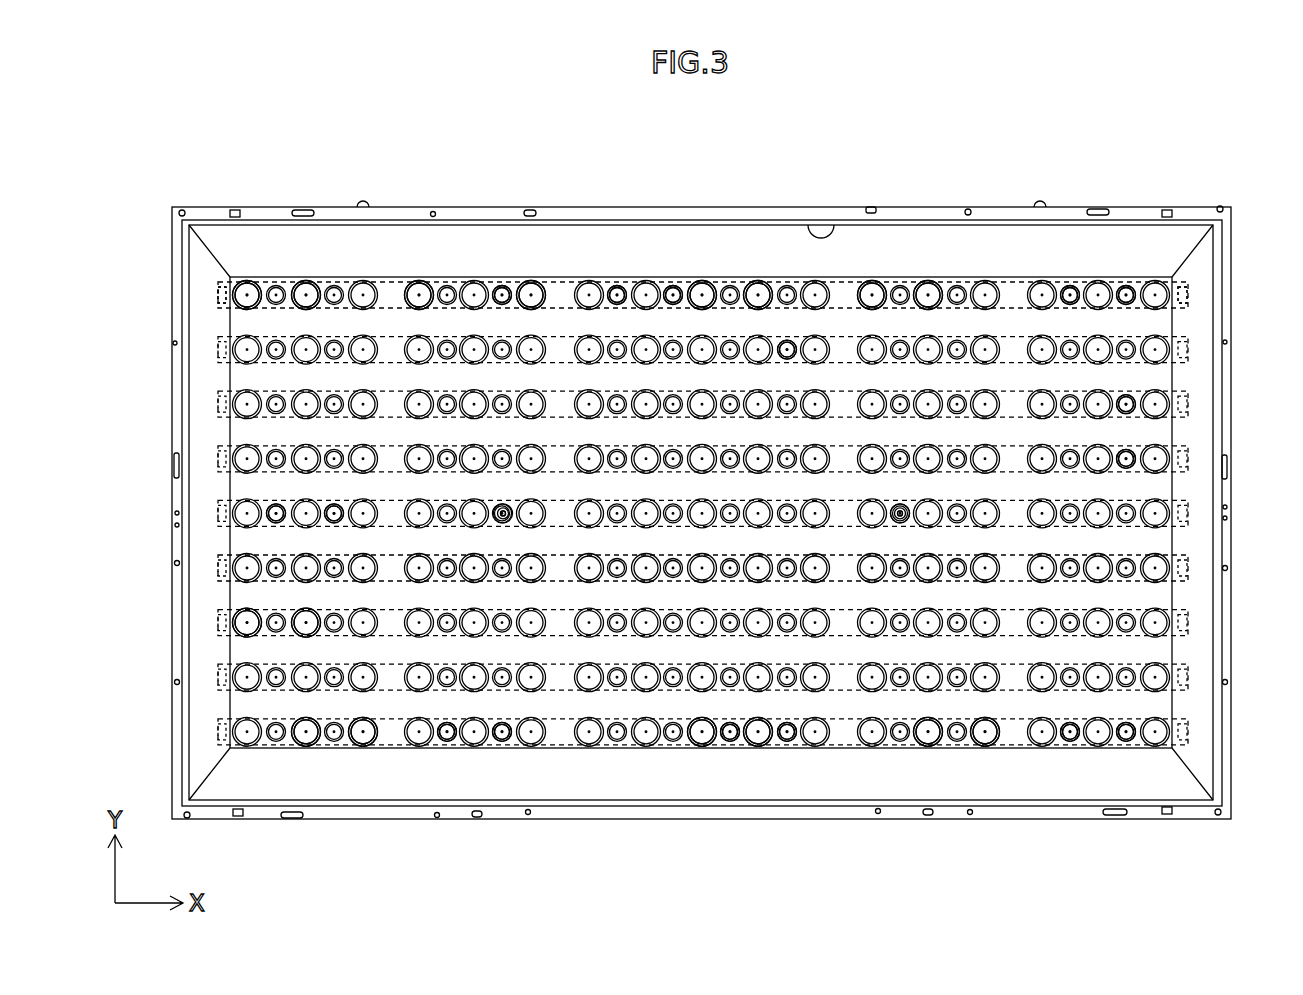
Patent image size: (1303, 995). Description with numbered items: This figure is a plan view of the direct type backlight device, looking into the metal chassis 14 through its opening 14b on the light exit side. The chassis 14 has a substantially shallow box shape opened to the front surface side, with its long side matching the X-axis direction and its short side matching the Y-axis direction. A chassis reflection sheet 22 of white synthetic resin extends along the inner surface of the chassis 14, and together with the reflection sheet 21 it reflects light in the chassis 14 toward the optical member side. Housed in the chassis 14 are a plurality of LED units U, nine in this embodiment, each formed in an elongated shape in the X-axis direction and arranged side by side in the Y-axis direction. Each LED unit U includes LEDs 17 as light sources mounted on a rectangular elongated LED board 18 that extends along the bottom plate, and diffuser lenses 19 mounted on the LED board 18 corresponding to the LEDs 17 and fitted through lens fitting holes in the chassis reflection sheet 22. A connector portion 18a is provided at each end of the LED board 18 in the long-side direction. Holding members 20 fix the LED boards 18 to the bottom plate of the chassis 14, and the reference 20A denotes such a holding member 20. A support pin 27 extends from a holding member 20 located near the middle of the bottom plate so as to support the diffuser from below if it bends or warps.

The chassis 14 is at (202, 207).
The opening 14b is at (837, 228).
The LED 17 is at (419, 283).
The LED board 18 is at (350, 282).
The connector portion 18a is at (218, 287).
The diffuser lens 19 is at (306, 283).
The holding member 20 is at (500, 507).
The LED 20A is at (673, 285).
The reflection sheet 21 is at (701, 512).
The chassis reflection sheet 22 is at (260, 425).
The support pin 27 is at (508, 518).
The LED unit U is at (795, 334).